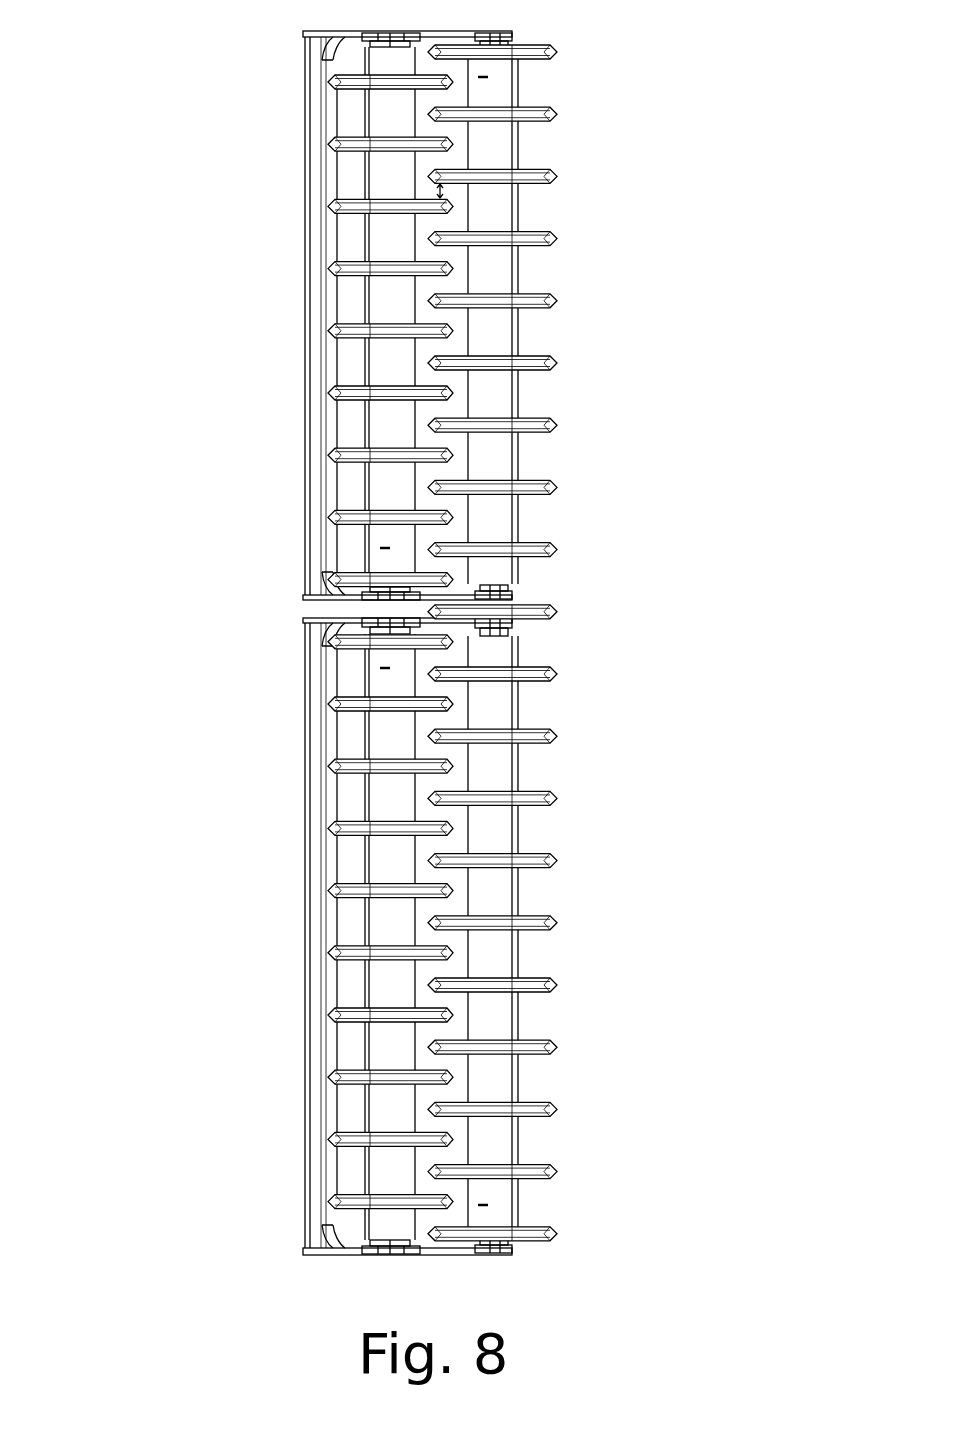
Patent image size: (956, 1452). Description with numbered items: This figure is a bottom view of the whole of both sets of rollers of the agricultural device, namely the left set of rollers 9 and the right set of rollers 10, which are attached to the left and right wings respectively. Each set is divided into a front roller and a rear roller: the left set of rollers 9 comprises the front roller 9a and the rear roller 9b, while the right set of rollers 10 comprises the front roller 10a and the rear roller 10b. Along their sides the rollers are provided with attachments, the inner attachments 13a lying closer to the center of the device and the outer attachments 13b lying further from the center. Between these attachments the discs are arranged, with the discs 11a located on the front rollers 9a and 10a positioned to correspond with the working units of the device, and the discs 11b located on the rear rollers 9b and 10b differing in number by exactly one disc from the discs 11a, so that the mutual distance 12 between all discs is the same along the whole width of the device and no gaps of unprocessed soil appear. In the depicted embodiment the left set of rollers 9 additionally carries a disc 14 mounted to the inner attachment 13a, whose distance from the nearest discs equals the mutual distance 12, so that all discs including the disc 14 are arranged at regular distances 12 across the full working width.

The left set of rollers 9 is at (307, 863).
The front roller 9a is at (387, 678).
The rear roller 9b is at (492, 1145).
The right set of rollers 10 is at (313, 200).
The front roller 10a is at (383, 367).
The rear roller 10b is at (492, 272).
The discs located on front rollers 11a is at (333, 1135).
The discs located on rear rollers 11b is at (530, 112).
The mutual distance 12 is at (445, 188).
The inner attachments 13a is at (387, 627).
The outer attachments 13b is at (365, 30).
The disc 14 is at (555, 612).